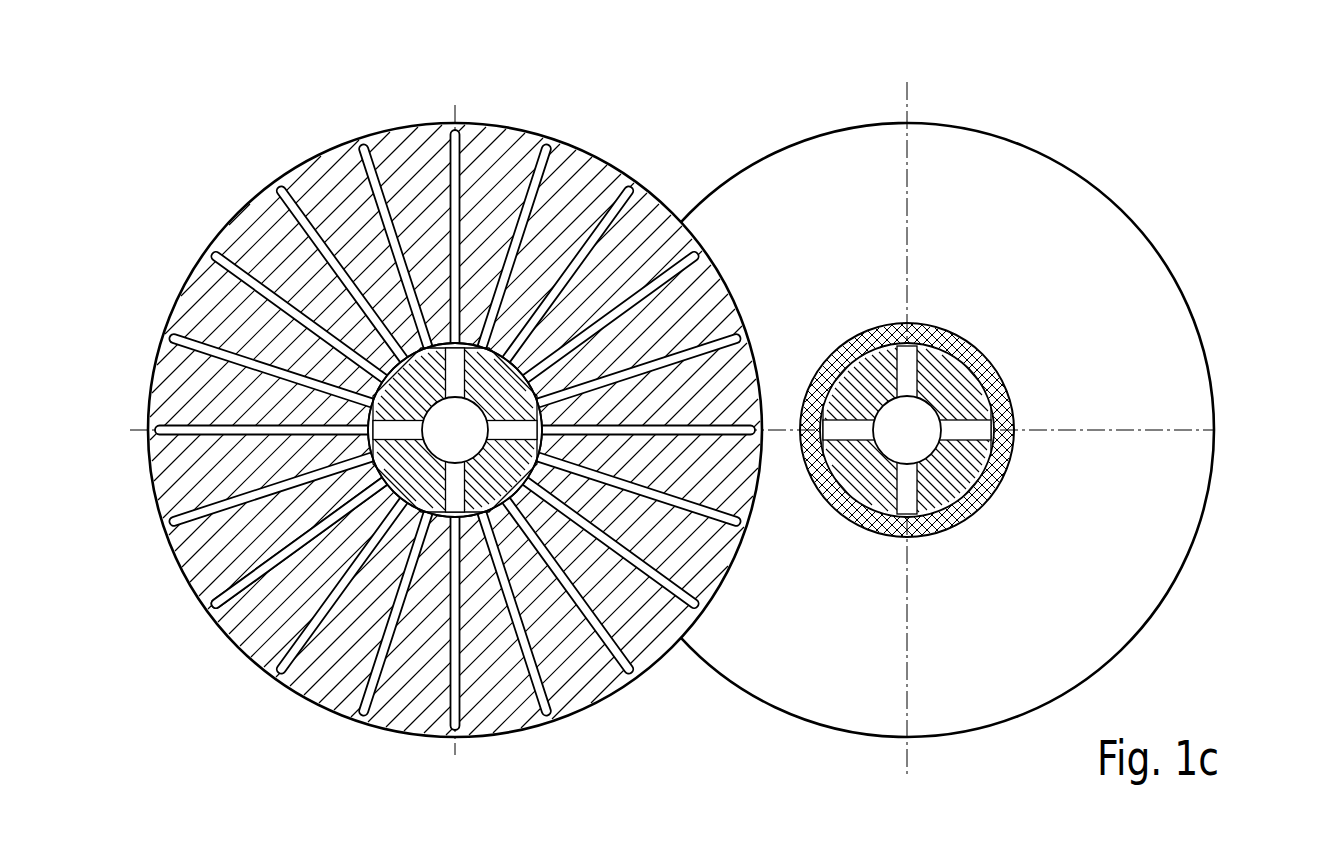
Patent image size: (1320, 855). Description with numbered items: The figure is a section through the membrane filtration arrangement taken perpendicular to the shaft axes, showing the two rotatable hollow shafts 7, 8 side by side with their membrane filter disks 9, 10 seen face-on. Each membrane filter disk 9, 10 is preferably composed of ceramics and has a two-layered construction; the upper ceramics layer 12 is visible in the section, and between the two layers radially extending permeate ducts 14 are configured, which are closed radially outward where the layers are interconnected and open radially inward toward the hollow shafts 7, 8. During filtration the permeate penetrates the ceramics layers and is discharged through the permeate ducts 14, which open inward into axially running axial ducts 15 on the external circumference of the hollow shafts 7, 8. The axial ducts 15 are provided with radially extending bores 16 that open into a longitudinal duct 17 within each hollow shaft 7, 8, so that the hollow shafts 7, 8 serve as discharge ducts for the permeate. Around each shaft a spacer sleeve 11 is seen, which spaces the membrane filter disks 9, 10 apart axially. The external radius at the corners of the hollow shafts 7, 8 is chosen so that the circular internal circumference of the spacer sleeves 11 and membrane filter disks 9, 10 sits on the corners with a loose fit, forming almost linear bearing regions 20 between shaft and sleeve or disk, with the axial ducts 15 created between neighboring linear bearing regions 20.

The hollow shaft 7 is at (987, 502).
The hollow shaft 8 is at (405, 485).
The membrane filter disk 9 is at (1120, 198).
The membrane filter disk 10 is at (617, 152).
The spacer sleeve 11 is at (876, 323).
The ceramics layer 12 is at (403, 163).
The permeate duct 14 is at (538, 177).
The axial duct 15 is at (523, 502).
The bore 16 is at (237, 632).
The longitudinal duct 17 is at (920, 408).
The linear bearing region 20 is at (498, 523).